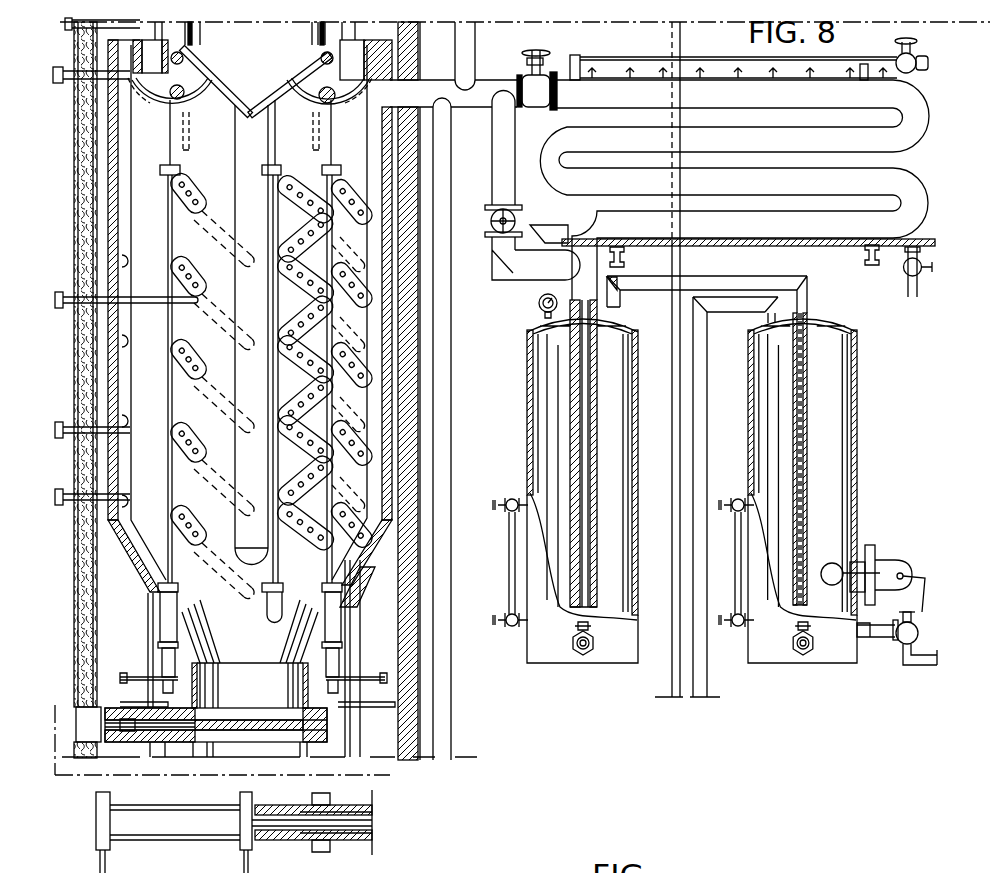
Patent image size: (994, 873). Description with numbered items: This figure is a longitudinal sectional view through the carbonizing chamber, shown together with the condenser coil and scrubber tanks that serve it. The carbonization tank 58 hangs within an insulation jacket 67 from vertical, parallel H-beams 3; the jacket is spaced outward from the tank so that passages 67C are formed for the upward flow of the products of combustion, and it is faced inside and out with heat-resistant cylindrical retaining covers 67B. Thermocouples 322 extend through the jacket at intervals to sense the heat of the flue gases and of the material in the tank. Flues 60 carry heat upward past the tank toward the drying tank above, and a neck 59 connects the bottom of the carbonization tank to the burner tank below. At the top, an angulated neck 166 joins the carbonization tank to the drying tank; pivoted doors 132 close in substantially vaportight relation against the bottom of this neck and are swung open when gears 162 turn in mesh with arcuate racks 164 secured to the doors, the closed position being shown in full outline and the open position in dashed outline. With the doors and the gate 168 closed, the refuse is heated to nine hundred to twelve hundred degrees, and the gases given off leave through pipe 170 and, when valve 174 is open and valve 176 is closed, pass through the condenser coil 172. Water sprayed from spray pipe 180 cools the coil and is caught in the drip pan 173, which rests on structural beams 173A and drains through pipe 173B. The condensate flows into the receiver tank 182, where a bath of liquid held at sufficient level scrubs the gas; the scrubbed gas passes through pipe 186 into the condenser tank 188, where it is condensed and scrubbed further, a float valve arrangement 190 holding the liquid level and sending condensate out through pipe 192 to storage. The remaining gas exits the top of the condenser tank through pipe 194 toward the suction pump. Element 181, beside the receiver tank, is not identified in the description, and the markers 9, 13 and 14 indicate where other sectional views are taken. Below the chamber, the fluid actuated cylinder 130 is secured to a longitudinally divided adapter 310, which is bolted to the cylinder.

The H-beams 3 is at (356, 632).
The section line 9- 9 is at (70, 454).
The section line 13- 13 is at (67, 136).
The section line 14- 14 is at (67, 650).
The thermocouples 322 is at (197, 298).
The carbonization chamber or tank 58 is at (382, 364).
The neck 59 is at (308, 750).
The flues 60 is at (243, 415).
The insulation jacket 67 is at (412, 594).
The cylindrical retaining covers 67B is at (418, 558).
The passages 67C is at (393, 476).
The fluid actuated cylinder 130 is at (175, 833).
The doors 132 is at (290, 82).
The gears 162 is at (250, 112).
The arcuate racks 164 is at (160, 98).
The angulated neck 166 is at (197, 43).
The gate 168 is at (332, 730).
The pipe 170 is at (428, 82).
The condenser coil 172 is at (558, 178).
The water-receiving or drip pan 173 is at (848, 245).
The structural beams 173A is at (622, 255).
The pipe 173B is at (918, 281).
The valve 174 is at (543, 97).
The valve 176 is at (497, 207).
The spray pipe 180 is at (667, 58).
The elbow conduit 181 is at (567, 284).
The receiver tank 182 is at (540, 425).
The pipe 186 is at (802, 301).
The condenser tank 188 is at (842, 412).
The float valve arrangement 190 is at (883, 567).
The pipe 192 is at (908, 657).
The pipe 194 is at (696, 428).
The longitudinally divided adapter 310 is at (300, 837).